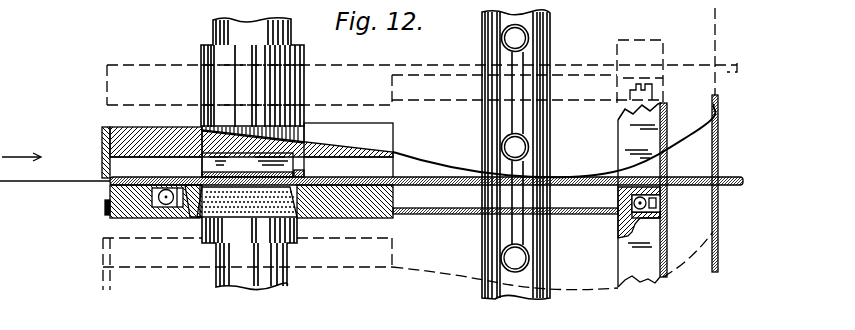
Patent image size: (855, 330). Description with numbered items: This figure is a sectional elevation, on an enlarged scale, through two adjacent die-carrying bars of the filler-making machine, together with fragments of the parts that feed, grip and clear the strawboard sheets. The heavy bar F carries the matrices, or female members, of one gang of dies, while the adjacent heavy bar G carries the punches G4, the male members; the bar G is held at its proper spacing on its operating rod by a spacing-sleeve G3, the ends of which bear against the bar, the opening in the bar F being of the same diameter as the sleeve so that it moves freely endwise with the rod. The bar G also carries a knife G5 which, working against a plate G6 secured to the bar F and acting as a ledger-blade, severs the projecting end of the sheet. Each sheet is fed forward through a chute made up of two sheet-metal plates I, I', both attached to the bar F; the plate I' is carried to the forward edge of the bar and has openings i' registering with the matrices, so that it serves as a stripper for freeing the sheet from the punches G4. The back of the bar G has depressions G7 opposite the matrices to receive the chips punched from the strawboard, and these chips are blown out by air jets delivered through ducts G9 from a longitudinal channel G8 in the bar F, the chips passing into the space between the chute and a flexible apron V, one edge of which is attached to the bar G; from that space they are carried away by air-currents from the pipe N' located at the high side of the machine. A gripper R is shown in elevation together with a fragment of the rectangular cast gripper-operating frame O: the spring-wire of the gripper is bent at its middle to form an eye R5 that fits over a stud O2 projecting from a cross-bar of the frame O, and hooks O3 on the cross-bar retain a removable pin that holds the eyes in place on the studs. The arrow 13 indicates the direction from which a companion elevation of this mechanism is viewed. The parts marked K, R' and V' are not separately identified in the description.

The arrow 13 is at (21, 148).
The bar G is at (156, 141).
The spacing-sleeve G3 is at (308, 82).
The punch G4 is at (247, 165).
The knife G5 is at (101, 156).
The plate G6 is at (108, 186).
The depression G7 is at (318, 141).
The longitudinal channel G8 is at (178, 208).
The duct G9 is at (192, 210).
The sheet-metal plate I is at (505, 202).
The sheet-metal plate I' is at (426, 171).
The opening i' is at (283, 170).
The pin K is at (163, 203).
The frame rail R is at (527, 154).
The tab R' is at (86, 213).
The eye R5 is at (668, 214).
The pipe N' is at (502, 155).
The flexible apron V is at (554, 140).
The post V' is at (704, 183).
The bar F is at (378, 219).
The frame O is at (618, 257).
The stud O2 is at (661, 202).
The hook O3 is at (625, 193).